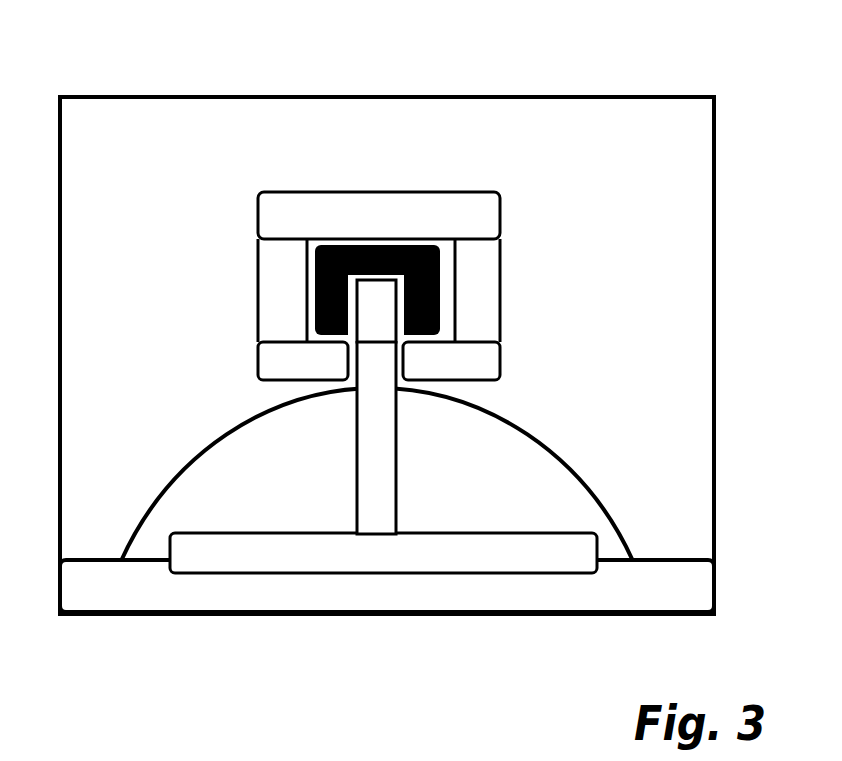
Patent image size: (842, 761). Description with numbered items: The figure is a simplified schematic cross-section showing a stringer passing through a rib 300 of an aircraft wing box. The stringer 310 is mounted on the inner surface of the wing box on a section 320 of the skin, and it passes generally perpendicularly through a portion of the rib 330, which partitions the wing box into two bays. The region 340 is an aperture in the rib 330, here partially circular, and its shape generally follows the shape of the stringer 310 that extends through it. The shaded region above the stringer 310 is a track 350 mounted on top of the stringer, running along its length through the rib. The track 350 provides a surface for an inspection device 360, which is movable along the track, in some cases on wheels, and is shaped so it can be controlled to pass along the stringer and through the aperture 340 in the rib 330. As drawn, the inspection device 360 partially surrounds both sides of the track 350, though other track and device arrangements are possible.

The rib 300 is at (101, 74).
The stringer 310 is at (238, 533).
The section of the skin 320 is at (389, 615).
The rib 330 is at (627, 152).
The aperture 340 is at (150, 294).
The track 350 is at (372, 244).
The inspection device 360 is at (503, 297).